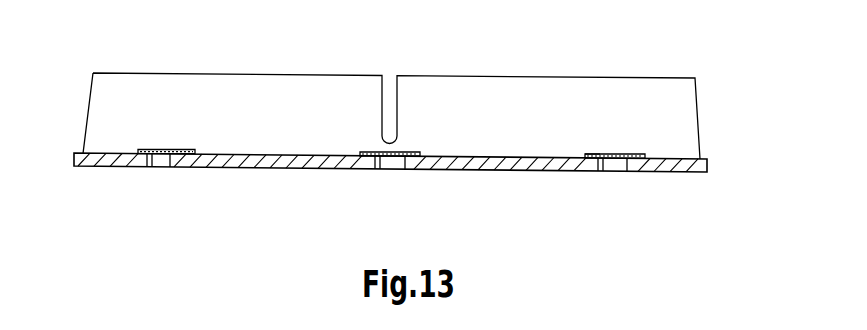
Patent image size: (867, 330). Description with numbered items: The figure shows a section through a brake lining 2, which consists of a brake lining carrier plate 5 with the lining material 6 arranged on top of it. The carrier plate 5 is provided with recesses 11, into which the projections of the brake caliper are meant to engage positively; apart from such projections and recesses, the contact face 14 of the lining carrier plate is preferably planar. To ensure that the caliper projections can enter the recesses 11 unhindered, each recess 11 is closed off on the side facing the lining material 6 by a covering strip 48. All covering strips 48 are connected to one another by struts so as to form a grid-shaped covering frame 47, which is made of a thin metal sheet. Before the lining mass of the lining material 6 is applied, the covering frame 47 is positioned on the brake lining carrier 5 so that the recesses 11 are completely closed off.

The brake lining 2 is at (712, 98).
The brake lining carrier plate 5 is at (693, 172).
The lining material 6 is at (523, 84).
The recesses 11 is at (160, 168).
The contact face 14 is at (268, 168).
The covering frame 47 is at (588, 153).
The covering strips 48 is at (166, 153).